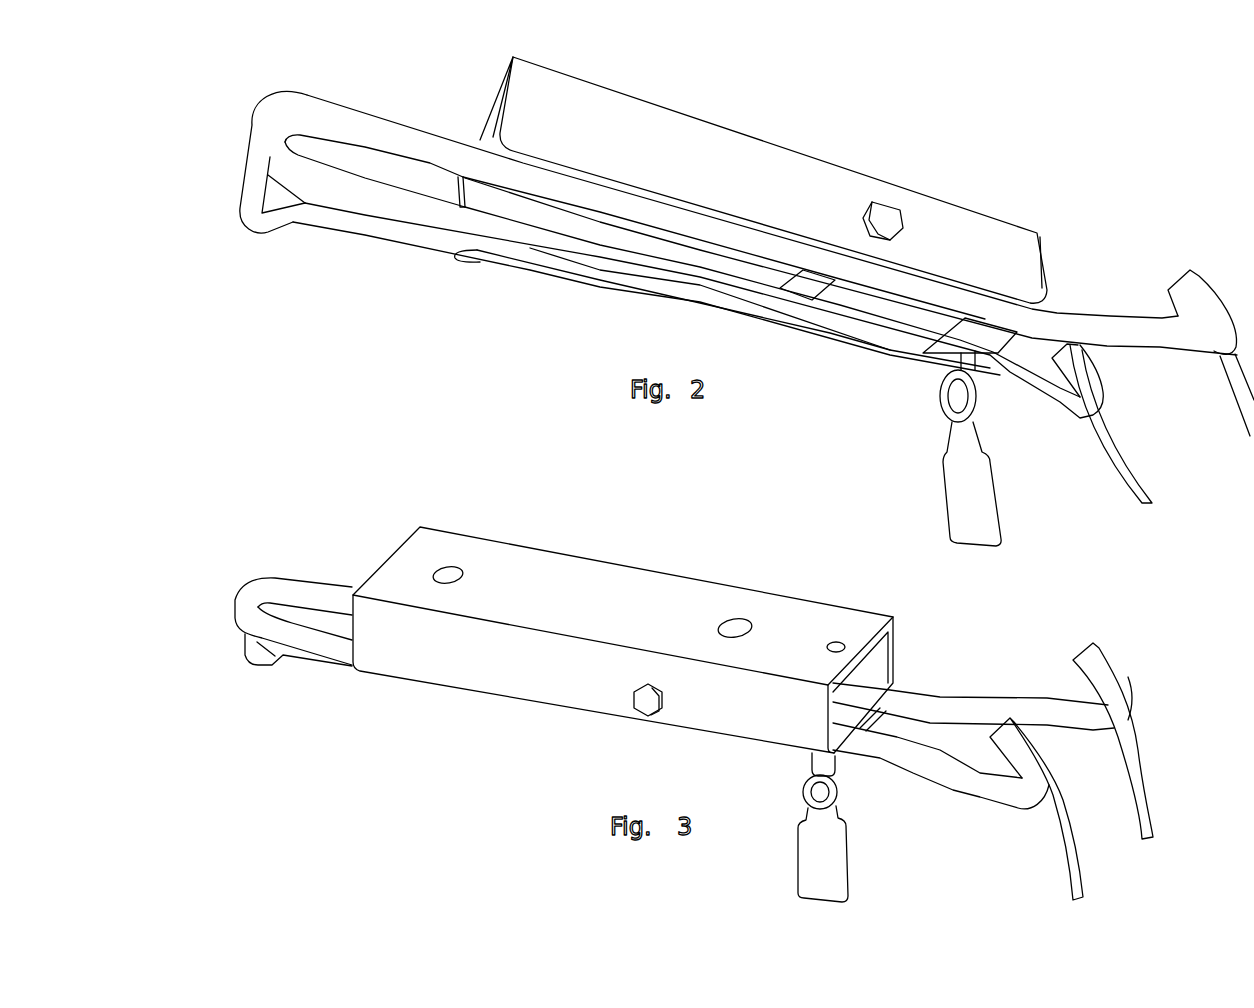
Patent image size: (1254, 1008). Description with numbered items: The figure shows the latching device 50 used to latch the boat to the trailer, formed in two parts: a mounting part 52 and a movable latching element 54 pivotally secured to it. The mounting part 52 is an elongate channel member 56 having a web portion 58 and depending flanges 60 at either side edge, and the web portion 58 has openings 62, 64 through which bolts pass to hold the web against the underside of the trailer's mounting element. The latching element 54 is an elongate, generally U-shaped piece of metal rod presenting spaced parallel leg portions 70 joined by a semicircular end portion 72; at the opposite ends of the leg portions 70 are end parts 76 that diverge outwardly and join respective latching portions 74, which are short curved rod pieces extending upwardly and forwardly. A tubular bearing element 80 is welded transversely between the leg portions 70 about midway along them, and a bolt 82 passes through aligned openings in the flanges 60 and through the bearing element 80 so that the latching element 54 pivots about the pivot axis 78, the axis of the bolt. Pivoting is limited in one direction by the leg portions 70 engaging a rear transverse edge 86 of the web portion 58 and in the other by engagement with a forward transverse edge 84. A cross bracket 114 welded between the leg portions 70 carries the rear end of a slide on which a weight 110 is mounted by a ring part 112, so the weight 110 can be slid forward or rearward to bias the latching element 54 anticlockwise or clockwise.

In FIG. 2, the latching device 50 is at (890, 155).
In FIG. 3, the latching device 50 is at (713, 537).
In FIG. 2, the mounting part 52 is at (787, 141).
In FIG. 2, the latching element 54 is at (275, 98).
In FIG. 3, the latching element 54 is at (247, 578).
In FIG. 2, the channel member 56 is at (483, 135).
In FIG. 3, the web portion 58 is at (539, 582).
In FIG. 3, the flanges 60 is at (513, 657).
In FIG. 3, the opening 62 is at (441, 565).
In FIG. 3, the opening 64 is at (747, 623).
In FIG. 2, the leg portions 70 is at (440, 150).
In FIG. 3, the end portion 72 is at (235, 615).
In FIG. 3, the latching portions 74 is at (1112, 680).
In FIG. 3, the end parts 76 is at (1002, 707).
In FIG. 2, the pivot axis 78 is at (885, 215).
In FIG. 2, the tubular bearing element 80 is at (803, 290).
In FIG. 2, the bolt 82 is at (905, 218).
In FIG. 2, the forward transverse edge 84 is at (497, 128).
In FIG. 3, the rear transverse edge 86 is at (863, 667).
In FIG. 2, the weight 110 is at (967, 488).
In FIG. 2, the ring part 112 is at (943, 403).
In FIG. 2, the cross bracket 114 is at (980, 340).